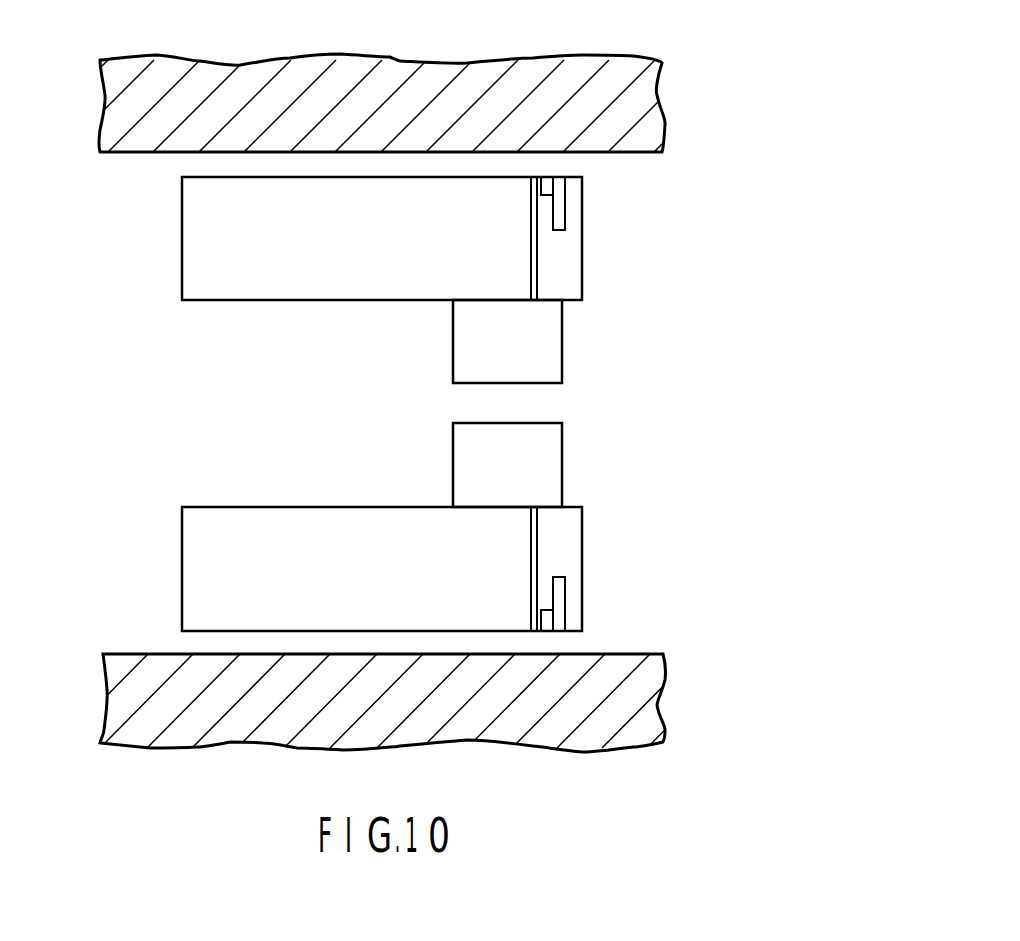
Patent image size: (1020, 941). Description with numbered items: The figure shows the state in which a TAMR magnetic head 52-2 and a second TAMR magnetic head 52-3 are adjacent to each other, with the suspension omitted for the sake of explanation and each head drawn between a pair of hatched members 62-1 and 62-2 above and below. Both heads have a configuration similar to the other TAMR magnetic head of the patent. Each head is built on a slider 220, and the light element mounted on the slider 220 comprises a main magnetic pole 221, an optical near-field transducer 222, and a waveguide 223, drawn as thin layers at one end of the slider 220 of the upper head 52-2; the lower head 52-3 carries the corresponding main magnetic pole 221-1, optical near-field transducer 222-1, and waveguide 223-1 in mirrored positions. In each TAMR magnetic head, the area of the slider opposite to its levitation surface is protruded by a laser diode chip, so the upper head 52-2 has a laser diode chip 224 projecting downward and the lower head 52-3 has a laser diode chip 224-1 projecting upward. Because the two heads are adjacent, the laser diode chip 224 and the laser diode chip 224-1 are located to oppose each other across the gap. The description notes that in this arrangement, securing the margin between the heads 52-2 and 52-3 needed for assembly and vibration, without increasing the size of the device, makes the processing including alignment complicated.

The chamber wall 62-1 is at (650, 90).
The chamber wall 62-2 is at (650, 717).
The TAMR magnetic head 52-2 is at (356, 278).
The TAMR magnetic head 52-3 is at (365, 527).
The slider 220 is at (182, 245).
The main magnetic pole 221 is at (560, 193).
The optical near-field transducer 222 is at (543, 192).
The waveguide 223 is at (535, 272).
The laser diode chip 224 is at (563, 349).
The main magnetic pole 221-1 is at (560, 612).
The optical near-field transducer 222-1 is at (545, 605).
The waveguide 223-1 is at (537, 548).
The laser diode chip 224-1 is at (563, 461).